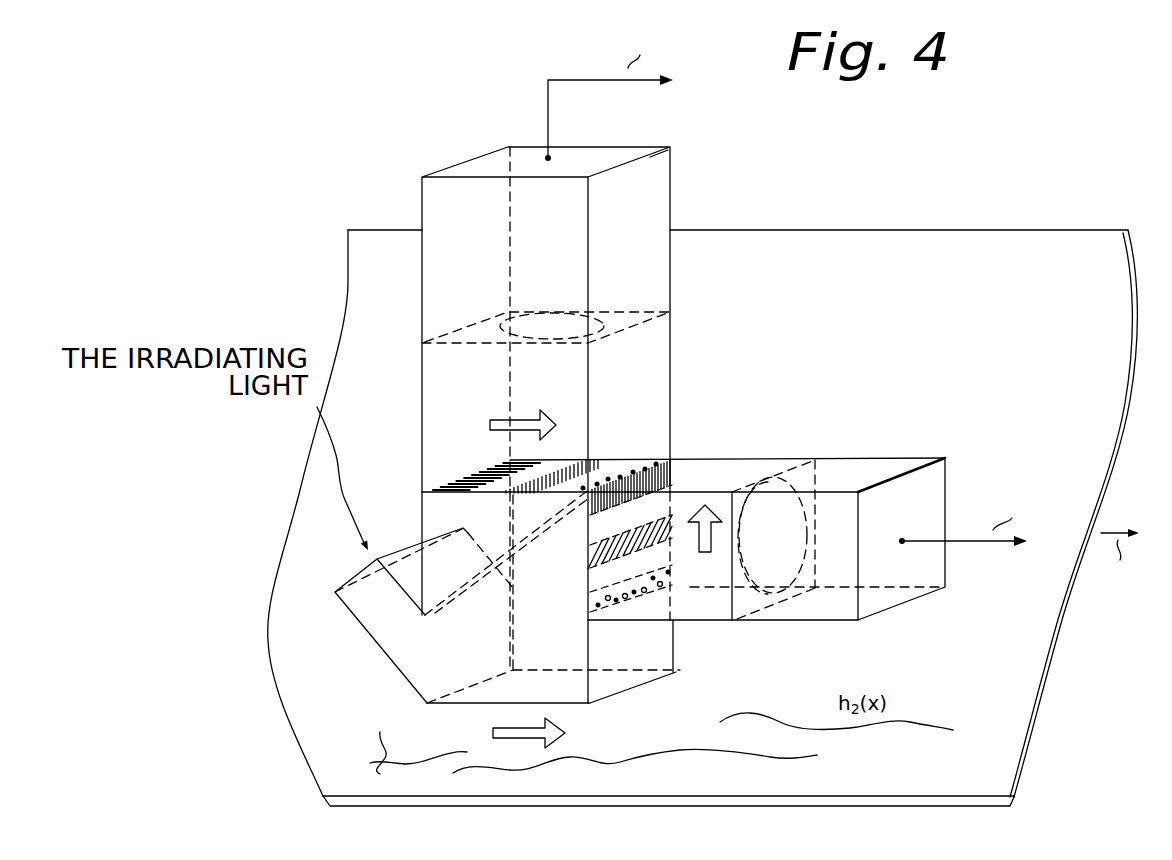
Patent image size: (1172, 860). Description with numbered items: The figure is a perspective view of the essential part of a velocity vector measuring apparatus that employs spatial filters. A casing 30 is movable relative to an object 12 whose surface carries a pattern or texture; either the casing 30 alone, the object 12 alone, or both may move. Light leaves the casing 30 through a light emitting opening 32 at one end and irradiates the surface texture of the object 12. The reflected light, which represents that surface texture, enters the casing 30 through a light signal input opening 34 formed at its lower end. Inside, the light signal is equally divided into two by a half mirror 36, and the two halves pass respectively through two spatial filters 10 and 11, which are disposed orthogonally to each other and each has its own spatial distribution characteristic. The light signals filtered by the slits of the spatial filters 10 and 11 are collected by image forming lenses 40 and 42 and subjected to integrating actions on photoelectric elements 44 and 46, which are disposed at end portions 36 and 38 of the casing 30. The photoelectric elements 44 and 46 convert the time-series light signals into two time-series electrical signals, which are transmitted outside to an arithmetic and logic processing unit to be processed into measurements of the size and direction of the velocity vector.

The spatial filter 10 is at (622, 450).
The spatial filter 11 is at (686, 572).
The object 12 is at (908, 782).
The casing 30 is at (653, 214).
The light emitting opening 32 is at (347, 583).
The light signal input opening 34 is at (575, 705).
The half mirror 36 is at (669, 160).
The end portion 38 is at (857, 600).
The image forming lens 40 is at (616, 318).
The image forming lens 42 is at (805, 477).
The photoelectric element 44 is at (533, 153).
The photoelectric element 46 is at (918, 525).